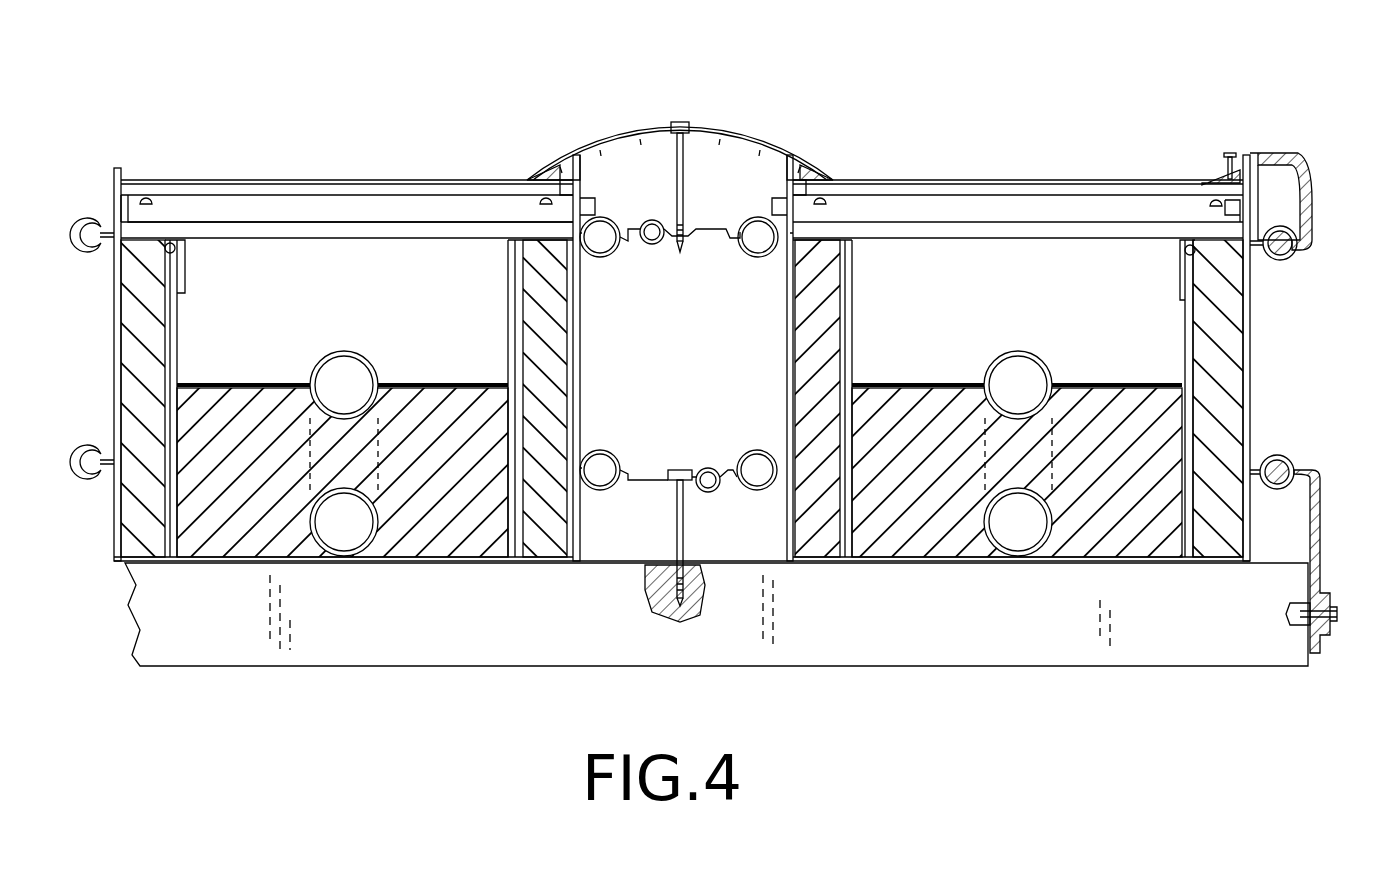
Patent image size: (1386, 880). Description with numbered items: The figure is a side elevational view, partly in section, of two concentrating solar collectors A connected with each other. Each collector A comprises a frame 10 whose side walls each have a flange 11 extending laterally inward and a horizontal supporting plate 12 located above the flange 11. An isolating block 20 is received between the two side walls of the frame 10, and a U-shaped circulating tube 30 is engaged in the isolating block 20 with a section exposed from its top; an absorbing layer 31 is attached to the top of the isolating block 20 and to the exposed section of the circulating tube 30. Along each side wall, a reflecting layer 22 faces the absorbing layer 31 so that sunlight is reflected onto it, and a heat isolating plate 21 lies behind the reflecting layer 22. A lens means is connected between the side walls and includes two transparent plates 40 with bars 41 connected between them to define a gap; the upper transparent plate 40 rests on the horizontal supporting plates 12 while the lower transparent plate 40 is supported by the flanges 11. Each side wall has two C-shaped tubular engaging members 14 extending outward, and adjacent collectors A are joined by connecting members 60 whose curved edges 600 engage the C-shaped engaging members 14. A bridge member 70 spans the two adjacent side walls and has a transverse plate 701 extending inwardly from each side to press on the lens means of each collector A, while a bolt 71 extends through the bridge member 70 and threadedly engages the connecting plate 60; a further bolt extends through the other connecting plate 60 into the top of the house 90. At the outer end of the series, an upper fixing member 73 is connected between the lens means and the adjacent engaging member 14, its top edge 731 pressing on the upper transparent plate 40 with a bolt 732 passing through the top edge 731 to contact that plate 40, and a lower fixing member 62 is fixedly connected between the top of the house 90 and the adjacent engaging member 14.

The frame 10 is at (566, 563).
The flange 11 is at (186, 258).
The horizontal supporting plate 12 is at (122, 170).
The C-shaped tubular engaging member 14 is at (1282, 262).
The isolating block 20 is at (462, 545).
The heat isolating plate 21 is at (1193, 345).
The reflecting layer 22 is at (1185, 312).
The circulating tube 30 is at (1046, 520).
The absorbing layer 31 is at (1022, 350).
The transparent plate 40 is at (1060, 190).
The bar 41 is at (1238, 212).
The connecting member 60 is at (735, 484).
The curved edge 600 is at (626, 482).
The lower fixing member 62 is at (1330, 548).
The bridge member 70 is at (750, 135).
The transverse plate 701 is at (800, 167).
The bolt 71 is at (679, 121).
The upper fixing member 73 is at (1290, 153).
The top edge 731 is at (1218, 180).
The bolt 732 is at (1231, 150).
The house 90 is at (1166, 668).
The concentrating solar collector A is at (596, 106).